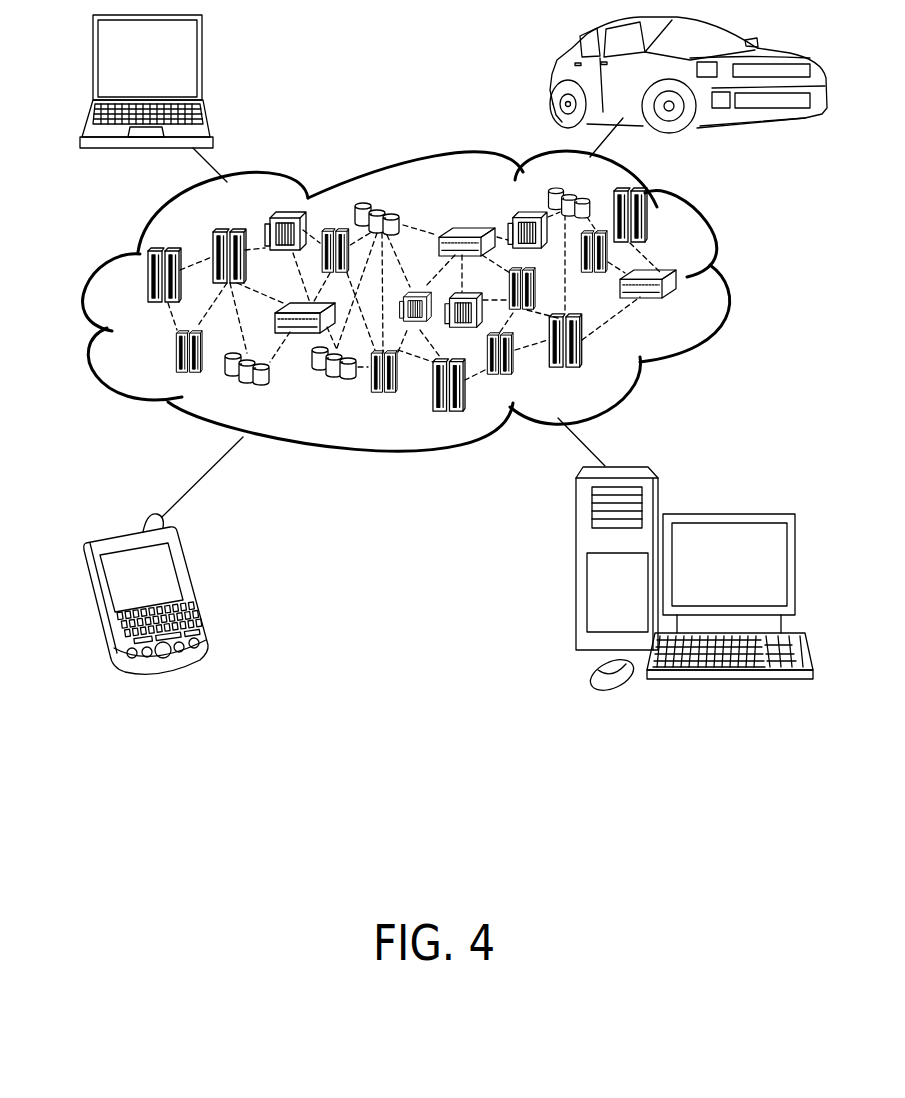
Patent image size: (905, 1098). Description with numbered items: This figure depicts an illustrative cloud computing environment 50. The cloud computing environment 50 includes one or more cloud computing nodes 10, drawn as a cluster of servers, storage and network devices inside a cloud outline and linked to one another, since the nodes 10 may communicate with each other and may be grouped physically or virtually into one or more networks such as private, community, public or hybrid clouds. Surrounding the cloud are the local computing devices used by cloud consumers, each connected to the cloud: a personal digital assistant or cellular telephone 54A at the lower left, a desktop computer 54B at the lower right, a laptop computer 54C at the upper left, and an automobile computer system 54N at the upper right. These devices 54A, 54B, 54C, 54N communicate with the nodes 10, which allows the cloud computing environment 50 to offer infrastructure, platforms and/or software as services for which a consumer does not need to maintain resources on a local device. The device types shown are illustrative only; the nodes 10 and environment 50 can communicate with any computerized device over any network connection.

The cloud computing nodes 10 is at (680, 305).
The cloud computing environment 50 is at (728, 284).
The personal digital assistant or cellular telephone 54A is at (195, 588).
The desktop computer 54B is at (727, 512).
The laptop computer 54C is at (203, 62).
The automobile computer system 54N is at (552, 78).